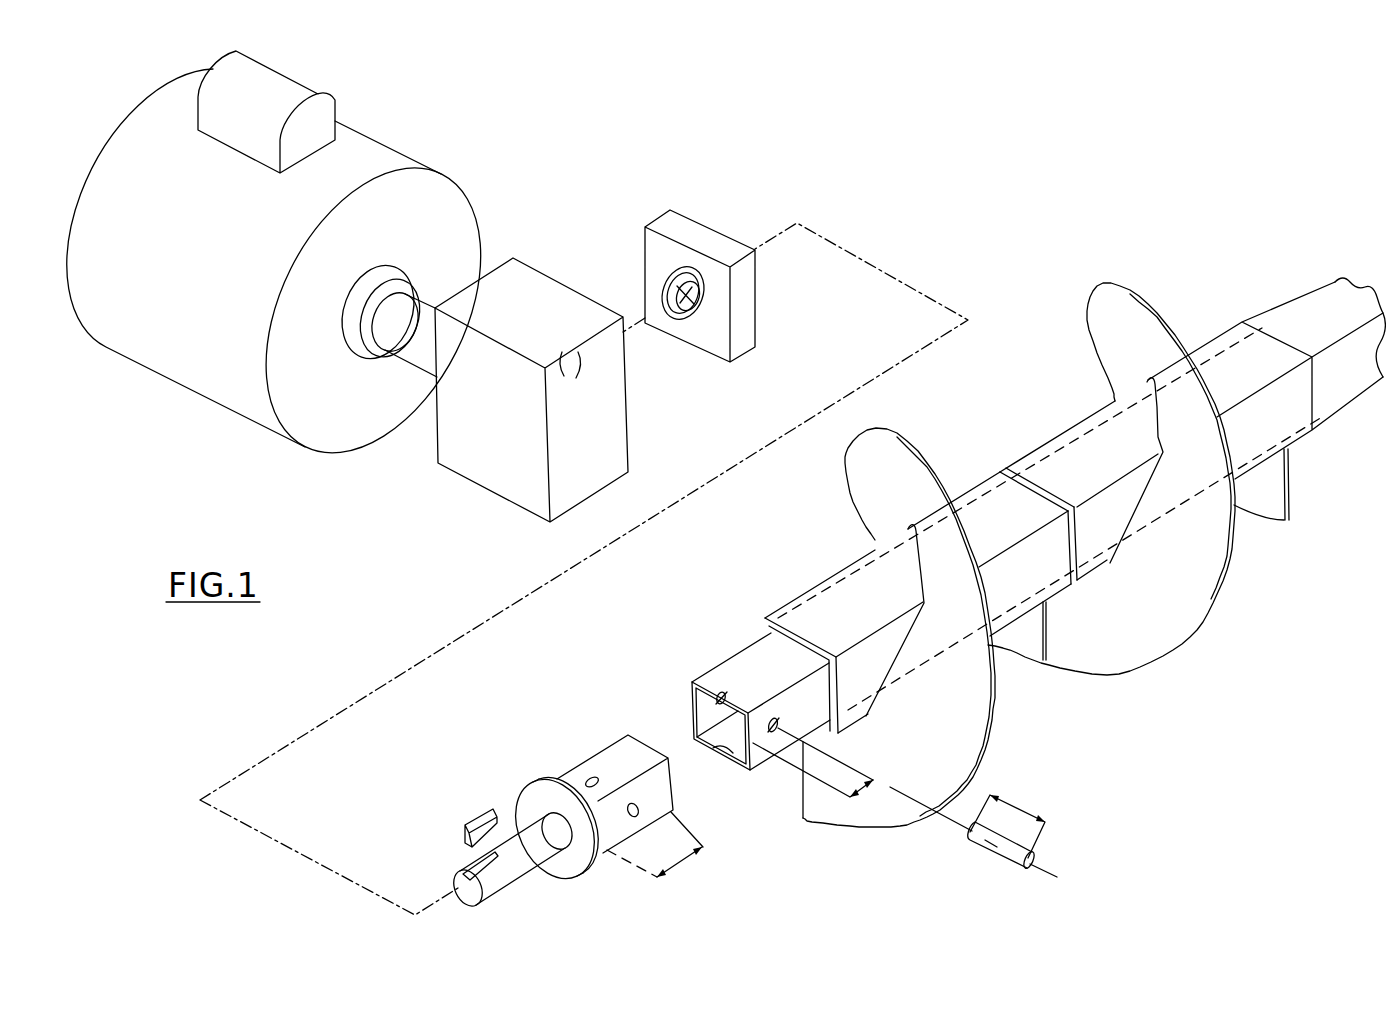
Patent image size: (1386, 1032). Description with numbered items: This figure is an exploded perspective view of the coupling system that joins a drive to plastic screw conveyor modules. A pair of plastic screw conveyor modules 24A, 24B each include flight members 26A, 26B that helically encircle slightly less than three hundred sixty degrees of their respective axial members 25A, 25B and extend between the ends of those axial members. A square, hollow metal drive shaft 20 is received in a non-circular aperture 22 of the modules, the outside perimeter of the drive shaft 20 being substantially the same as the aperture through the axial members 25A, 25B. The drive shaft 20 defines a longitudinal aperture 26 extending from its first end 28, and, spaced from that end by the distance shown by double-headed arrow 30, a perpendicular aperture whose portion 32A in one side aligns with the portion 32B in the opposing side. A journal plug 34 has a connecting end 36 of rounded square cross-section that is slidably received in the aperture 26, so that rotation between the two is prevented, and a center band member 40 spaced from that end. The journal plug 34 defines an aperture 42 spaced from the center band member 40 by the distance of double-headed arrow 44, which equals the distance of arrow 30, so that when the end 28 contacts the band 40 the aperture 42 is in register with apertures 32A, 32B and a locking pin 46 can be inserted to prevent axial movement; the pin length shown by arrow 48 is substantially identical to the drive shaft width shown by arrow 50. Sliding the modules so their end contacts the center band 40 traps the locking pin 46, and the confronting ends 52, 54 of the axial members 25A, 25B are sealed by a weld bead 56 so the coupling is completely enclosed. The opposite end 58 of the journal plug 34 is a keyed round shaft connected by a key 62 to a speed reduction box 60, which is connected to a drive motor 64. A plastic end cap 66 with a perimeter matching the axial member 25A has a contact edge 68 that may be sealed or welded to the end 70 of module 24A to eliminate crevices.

The drive shaft 20 is at (758, 762).
The non-circular aperture 22 is at (765, 623).
The plastic screw conveyor module 24A is at (833, 565).
The plastic screw conveyor module 24B is at (1068, 421).
The axial member 25A is at (862, 662).
The axial member 25B is at (1100, 507).
The longitudinal aperture 26 is at (717, 748).
The flight member 26A is at (868, 462).
The flight member 26B is at (1103, 303).
The first end 28 is at (687, 690).
The double-headed arrow 30 is at (862, 790).
The aperture portion 32A is at (775, 712).
The aperture portion 32B is at (727, 692).
The journal plug 34 is at (582, 890).
The connecting end 36 is at (613, 760).
The center band member 40 is at (540, 783).
The aperture 42 is at (632, 817).
The double-headed arrow 44 is at (687, 877).
The locking pin 46 is at (983, 845).
The double-headed arrow 48 is at (1017, 804).
The double-headed arrow 50 is at (683, 735).
The confronting end 52 is at (1060, 537).
The confronting end 54 is at (1080, 537).
The weld bead 56 is at (985, 462).
The end 58 is at (520, 863).
The speed reduction box 60 is at (507, 429).
The key 62 is at (483, 812).
The drive motor 64 is at (179, 294).
The plastic end cap 66 is at (734, 364).
The contact edge 68 is at (688, 213).
The end 70 is at (762, 612).